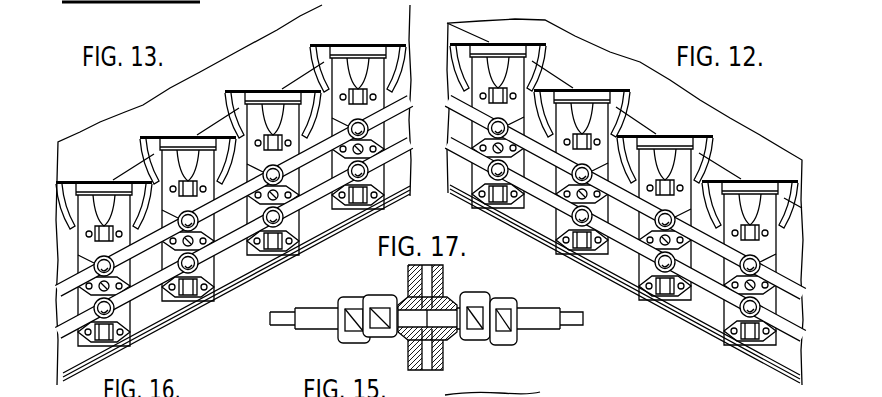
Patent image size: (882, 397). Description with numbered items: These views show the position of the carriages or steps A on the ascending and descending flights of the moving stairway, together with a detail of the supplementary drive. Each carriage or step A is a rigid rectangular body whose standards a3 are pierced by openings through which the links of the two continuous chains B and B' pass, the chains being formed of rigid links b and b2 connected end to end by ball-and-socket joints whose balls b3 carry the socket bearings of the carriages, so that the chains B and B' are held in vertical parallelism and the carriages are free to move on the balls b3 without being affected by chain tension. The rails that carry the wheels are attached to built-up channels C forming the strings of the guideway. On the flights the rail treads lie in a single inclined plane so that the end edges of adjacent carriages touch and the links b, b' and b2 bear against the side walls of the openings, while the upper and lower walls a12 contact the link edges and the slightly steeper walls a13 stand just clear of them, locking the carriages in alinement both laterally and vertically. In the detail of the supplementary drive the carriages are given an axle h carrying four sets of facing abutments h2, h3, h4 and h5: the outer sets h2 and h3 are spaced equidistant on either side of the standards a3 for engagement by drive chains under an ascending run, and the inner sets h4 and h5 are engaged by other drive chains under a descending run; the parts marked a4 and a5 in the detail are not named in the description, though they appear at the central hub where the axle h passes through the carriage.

In FIG. 13, the carriage or step A is at (188, 209).
In FIG. 12, the carriage or step A is at (581, 163).
In FIG. 13, the chain B is at (234, 196).
In FIG. 12, the chain B is at (625, 198).
In FIG. 13, the chain B' is at (234, 238).
In FIG. 12, the chain B' is at (625, 240).
In FIG. 12, the built-up channel C is at (800, 274).
In FIG. 13, the standard a3 is at (70, 252).
In FIG. 12, the standard a3 is at (614, 170).
In FIG. 17, the hub block a4 is at (443, 354).
In FIG. 17, the stud a5 is at (408, 358).
In FIG. 12, the upper and lower opening wall a12 is at (571, 174).
In FIG. 13, the lower and upper opening wall a13 is at (208, 230).
In FIG. 12, the lower and upper opening wall a13 is at (487, 128).
In FIG. 13, the link b is at (237, 181).
In FIG. 12, the link b is at (528, 172).
In FIG. 13, the link b2 is at (151, 270).
In FIG. 13, the ball b3 is at (205, 272).
In FIG. 12, the ball b3 is at (760, 262).
In FIG. 13, the bar link b' is at (252, 257).
In FIG. 17, the axle h is at (323, 331).
In FIG. 17, the facing abutment h2 is at (514, 322).
In FIG. 17, the facing abutment h3 is at (353, 309).
In FIG. 17, the facing abutment h4 is at (464, 340).
In FIG. 17, the facing abutment h5 is at (393, 296).